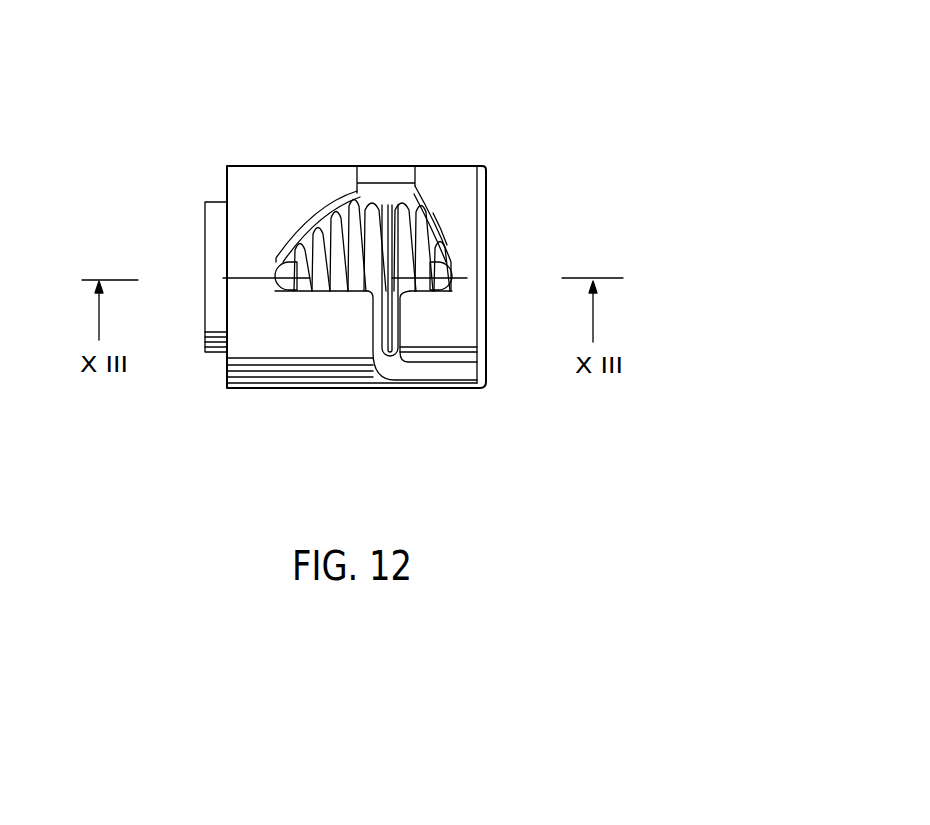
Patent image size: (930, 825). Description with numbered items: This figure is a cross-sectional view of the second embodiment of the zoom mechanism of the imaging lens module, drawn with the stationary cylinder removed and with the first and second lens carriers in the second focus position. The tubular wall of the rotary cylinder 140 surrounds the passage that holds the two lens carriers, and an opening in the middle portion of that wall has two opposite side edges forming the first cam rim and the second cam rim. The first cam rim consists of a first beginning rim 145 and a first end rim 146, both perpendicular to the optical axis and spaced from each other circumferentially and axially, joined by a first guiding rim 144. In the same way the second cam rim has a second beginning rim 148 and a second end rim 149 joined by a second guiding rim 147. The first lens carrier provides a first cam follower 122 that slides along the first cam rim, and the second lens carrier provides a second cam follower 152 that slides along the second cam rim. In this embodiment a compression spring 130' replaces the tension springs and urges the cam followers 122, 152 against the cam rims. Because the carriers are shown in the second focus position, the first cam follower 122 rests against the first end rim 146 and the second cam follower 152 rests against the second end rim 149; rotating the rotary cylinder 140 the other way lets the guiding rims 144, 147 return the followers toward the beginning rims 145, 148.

The first cam follower 122 is at (435, 282).
The compression spring 130' is at (408, 178).
The rotary cylinder 140 is at (345, 387).
The first guiding rim 144 is at (433, 213).
The first beginning rim 145 is at (418, 166).
The first end rim 146 is at (450, 283).
The second guiding rim 147 is at (318, 213).
The second beginning rim 148 is at (355, 183).
The second end rim 149 is at (297, 263).
The second cam follower 152 is at (297, 293).